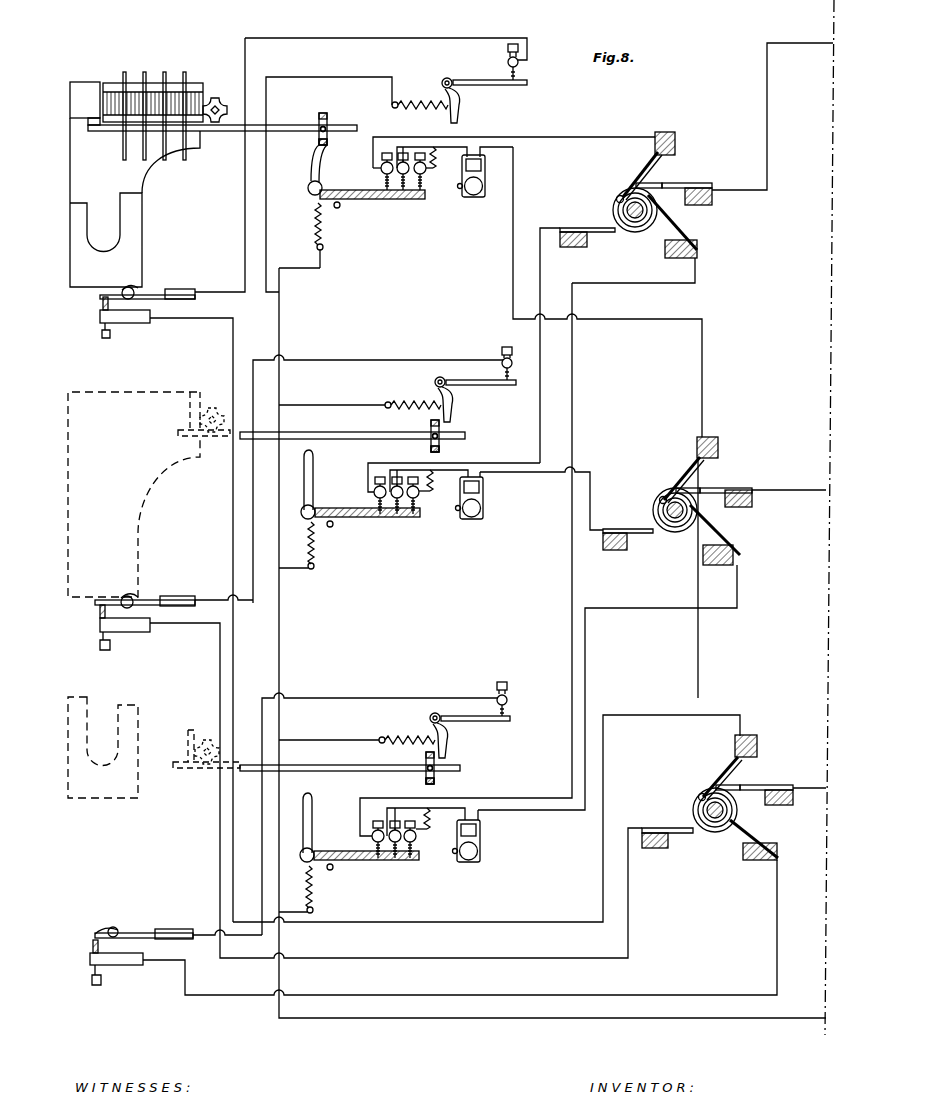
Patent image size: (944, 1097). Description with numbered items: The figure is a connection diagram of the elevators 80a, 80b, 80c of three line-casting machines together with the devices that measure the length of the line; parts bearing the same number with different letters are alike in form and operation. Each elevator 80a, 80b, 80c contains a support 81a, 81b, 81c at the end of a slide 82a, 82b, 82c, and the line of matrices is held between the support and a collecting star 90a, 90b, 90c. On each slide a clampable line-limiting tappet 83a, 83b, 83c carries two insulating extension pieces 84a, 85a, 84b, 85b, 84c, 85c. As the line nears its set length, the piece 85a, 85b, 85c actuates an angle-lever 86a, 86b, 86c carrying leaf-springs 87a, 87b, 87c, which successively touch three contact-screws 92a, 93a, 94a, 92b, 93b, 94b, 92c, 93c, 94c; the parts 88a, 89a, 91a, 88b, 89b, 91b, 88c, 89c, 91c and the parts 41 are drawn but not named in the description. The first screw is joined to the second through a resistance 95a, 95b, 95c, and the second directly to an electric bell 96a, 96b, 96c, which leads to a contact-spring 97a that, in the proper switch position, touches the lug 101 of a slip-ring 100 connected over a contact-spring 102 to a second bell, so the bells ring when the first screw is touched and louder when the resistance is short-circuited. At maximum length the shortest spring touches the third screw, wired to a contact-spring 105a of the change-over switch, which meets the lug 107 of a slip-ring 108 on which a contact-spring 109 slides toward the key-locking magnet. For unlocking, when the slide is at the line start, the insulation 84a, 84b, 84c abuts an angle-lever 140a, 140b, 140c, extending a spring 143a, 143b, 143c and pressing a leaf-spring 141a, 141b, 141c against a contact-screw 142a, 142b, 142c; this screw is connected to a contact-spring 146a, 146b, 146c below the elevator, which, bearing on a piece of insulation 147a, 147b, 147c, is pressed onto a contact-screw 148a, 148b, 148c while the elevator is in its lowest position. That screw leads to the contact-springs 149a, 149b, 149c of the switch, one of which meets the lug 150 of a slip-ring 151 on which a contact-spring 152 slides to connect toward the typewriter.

The elevator 80a is at (95, 72).
The support 81a is at (85, 103).
The collecting star 90a is at (220, 96).
The slide 82a is at (285, 125).
The extension piece 84a is at (325, 113).
The tappet 83a is at (328, 128).
The extension piece 85a is at (328, 142).
The angle-lever 86a is at (311, 166).
The pivot 89a is at (308, 188).
The leaf-springs 87a is at (375, 200).
The spring 88a is at (316, 222).
The stop 91a is at (337, 208).
The contact-screw 94a is at (380, 172).
The contact-screw 93a is at (408, 192).
The contact-screw 92a is at (426, 170).
The resistance 95a is at (435, 150).
The electric bell 96a is at (474, 197).
The angle-lever 140a is at (442, 85).
The leaf-spring 141a is at (490, 72).
The contact-screw 142a is at (519, 48).
The spring 143a is at (415, 109).
The contact-spring 105a is at (640, 165).
The lug 107 is at (617, 196).
The slip-ring 108 is at (613, 210).
The contact-spring 109 is at (680, 183).
The shaft 41 is at (646, 183).
The piece of insulation 147a is at (135, 291).
The contact-spring 146a is at (158, 299).
The contact-screw 148a is at (103, 303).
The elevator 80b is at (133, 392).
The support 81b is at (190, 407).
The collecting star 90b is at (212, 405).
The slide 82b is at (340, 427).
The insulation 84b is at (441, 426).
The tappet 83b is at (431, 445).
The extension piece 85b is at (440, 450).
The angle-lever 86b is at (306, 482).
The pivot 89b is at (303, 510).
The leaf-springs 87b is at (365, 518).
The spring 88b is at (310, 545).
The stop 91b is at (342, 533).
The contact-screw 94b is at (374, 495).
The contact-screw 93b is at (402, 514).
The contact-screw 92b is at (419, 495).
The resistance 95b is at (441, 481).
The electric bell 96b is at (470, 519).
The angle-lever 140b is at (435, 385).
The leaf-spring 141b is at (482, 377).
The contact-screw 142b is at (512, 338).
The spring 143b is at (421, 410).
The contact-spring 97a is at (683, 452).
The lug 101 is at (659, 497).
The slip-ring 100 is at (653, 510).
The contact-spring 102 is at (735, 488).
The piece of insulation 147b is at (133, 600).
The contact-spring 146b is at (157, 605).
The contact-screw 148b is at (100, 612).
The elevator 80c is at (140, 714).
The support 81c is at (188, 750).
The collecting star 90c is at (208, 738).
The slide 82c is at (318, 760).
The extension piece 84c is at (436, 758).
The tappet 83c is at (426, 778).
The extension piece 85c is at (435, 782).
The angle-lever 86c is at (305, 824).
The pivot 89c is at (302, 862).
The leaf-springs 87c is at (364, 861).
The spring 88c is at (308, 890).
The stop 91c is at (339, 876).
The contact-screw 94c is at (372, 839).
The contact-screw 93c is at (400, 858).
The contact-screw 92c is at (416, 839).
The resistance 95c is at (438, 820).
The electric bell 96c is at (466, 862).
The angle-lever 140c is at (430, 721).
The leaf-spring 141c is at (478, 713).
The contact-screw 142c is at (512, 672).
The spring 143c is at (416, 745).
The contact-spring 149a is at (724, 760).
The lug 150 is at (698, 796).
The slip-ring 151 is at (692, 809).
The contact-spring 149b is at (673, 838).
The contact-spring 152 is at (758, 785).
The contact-spring 149c is at (762, 838).
The piece of insulation 147c is at (116, 928).
The contact-spring 146c is at (152, 938).
The contact-screw 148c is at (93, 943).